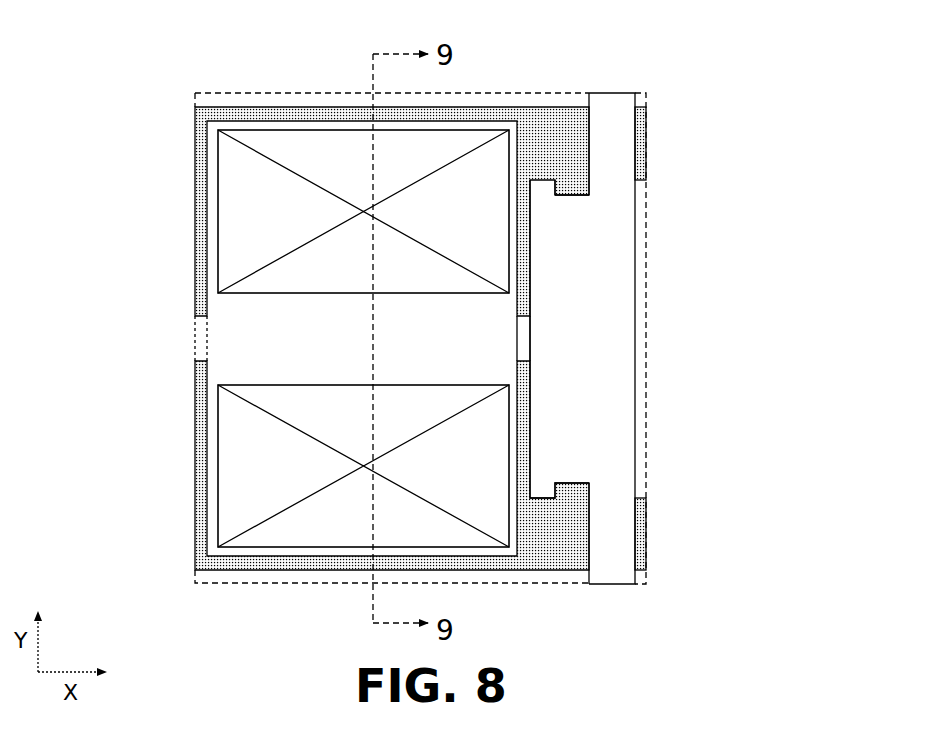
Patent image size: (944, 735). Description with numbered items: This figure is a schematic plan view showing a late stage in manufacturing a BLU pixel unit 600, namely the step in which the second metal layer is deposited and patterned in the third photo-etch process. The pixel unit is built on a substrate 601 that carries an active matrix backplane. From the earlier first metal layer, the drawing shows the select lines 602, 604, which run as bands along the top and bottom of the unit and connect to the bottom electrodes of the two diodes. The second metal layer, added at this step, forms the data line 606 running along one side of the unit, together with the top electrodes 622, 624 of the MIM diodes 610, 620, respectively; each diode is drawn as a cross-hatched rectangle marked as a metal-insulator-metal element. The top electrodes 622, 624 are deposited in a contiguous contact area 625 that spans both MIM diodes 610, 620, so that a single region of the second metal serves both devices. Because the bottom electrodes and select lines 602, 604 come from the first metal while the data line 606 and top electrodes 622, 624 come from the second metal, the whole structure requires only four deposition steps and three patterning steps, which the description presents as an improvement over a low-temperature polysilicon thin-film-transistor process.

The BLU pixel unit 600 is at (714, 122).
The substrate 601 is at (517, 103).
The select line 602 is at (337, 112).
The select line 604 is at (338, 563).
The data line 606 is at (610, 288).
The MIM diode 610 is at (178, 247).
The MIM diode 620 is at (179, 531).
The top electrode 622 is at (238, 201).
The top electrode 624 is at (235, 445).
The contact area 625 is at (218, 342).